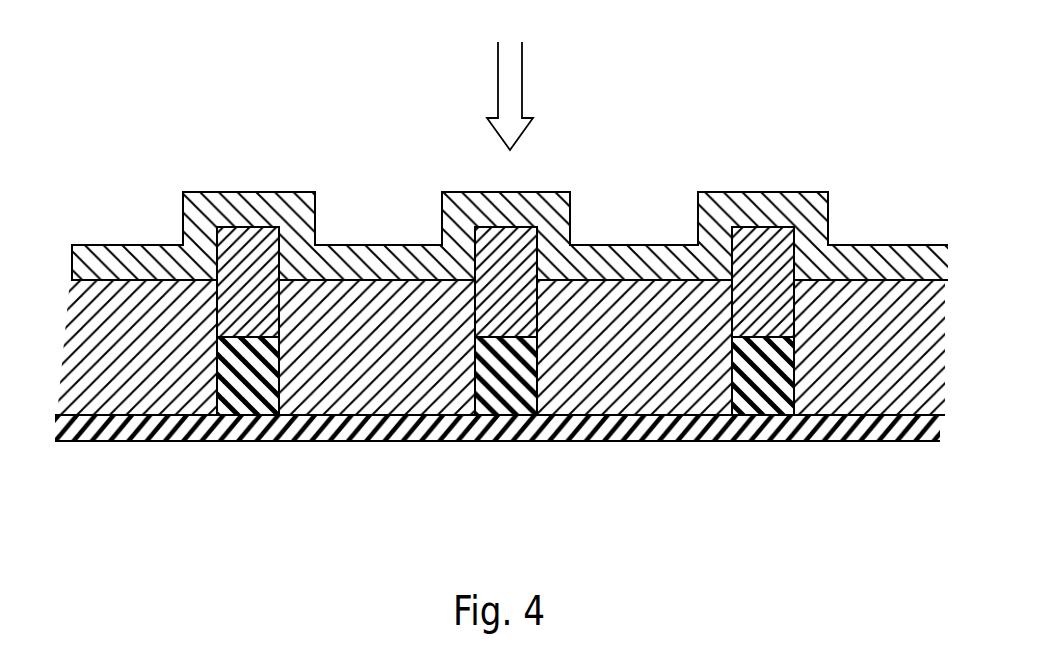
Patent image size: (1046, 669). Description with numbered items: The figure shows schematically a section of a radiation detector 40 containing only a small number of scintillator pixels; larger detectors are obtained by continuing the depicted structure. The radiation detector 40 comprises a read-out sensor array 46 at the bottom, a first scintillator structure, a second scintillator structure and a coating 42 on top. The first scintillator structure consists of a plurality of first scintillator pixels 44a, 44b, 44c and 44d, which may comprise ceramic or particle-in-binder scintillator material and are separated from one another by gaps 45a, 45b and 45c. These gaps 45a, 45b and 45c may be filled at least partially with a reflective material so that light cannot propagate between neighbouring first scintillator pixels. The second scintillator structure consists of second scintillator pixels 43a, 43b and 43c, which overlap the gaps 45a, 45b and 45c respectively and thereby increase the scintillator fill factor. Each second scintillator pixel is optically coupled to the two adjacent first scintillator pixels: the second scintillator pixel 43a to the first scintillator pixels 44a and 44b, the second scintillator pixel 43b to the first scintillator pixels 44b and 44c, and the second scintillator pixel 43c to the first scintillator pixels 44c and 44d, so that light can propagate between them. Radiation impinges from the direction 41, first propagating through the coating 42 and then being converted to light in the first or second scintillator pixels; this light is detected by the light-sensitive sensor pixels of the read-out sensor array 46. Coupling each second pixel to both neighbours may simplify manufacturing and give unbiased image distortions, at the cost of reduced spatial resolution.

The radiation detector 40 is at (495, 311).
The direction 41 is at (528, 89).
The coating 42 is at (107, 166).
The second scintillator pixel 43a is at (261, 255).
The second scintillator pixel 43b is at (514, 242).
The second scintillator pixel 43c is at (773, 243).
The first scintillator pixel 44a is at (119, 388).
The first scintillator pixel 44b is at (378, 388).
The first scintillator pixel 44c is at (643, 388).
The first scintillator pixel 44d is at (868, 388).
The gap 45a is at (247, 407).
The gap 45b is at (502, 407).
The gap 45c is at (752, 407).
The read-out sensor array 46 is at (157, 448).